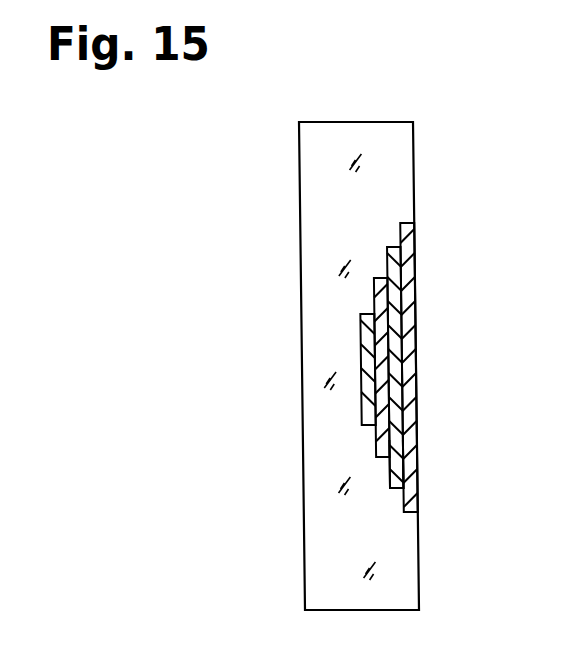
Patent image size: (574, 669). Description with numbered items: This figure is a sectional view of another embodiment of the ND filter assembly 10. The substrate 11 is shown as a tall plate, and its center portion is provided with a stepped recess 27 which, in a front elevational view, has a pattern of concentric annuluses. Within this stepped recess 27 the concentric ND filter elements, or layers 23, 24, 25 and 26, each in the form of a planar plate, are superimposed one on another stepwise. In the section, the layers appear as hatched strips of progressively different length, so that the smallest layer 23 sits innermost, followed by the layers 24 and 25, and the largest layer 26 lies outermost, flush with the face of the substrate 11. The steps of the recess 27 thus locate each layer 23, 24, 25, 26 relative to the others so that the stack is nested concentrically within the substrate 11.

The electrochromic element 10 is at (282, 158).
The substrate 11 is at (408, 147).
The ND filter element (layer) 23 is at (365, 358).
The ND filter element (layer) 24 is at (383, 377).
The ND filter element (layer) 25 is at (393, 402).
The ND filter element (layer) 26 is at (412, 438).
The stepped recess 27 is at (395, 483).